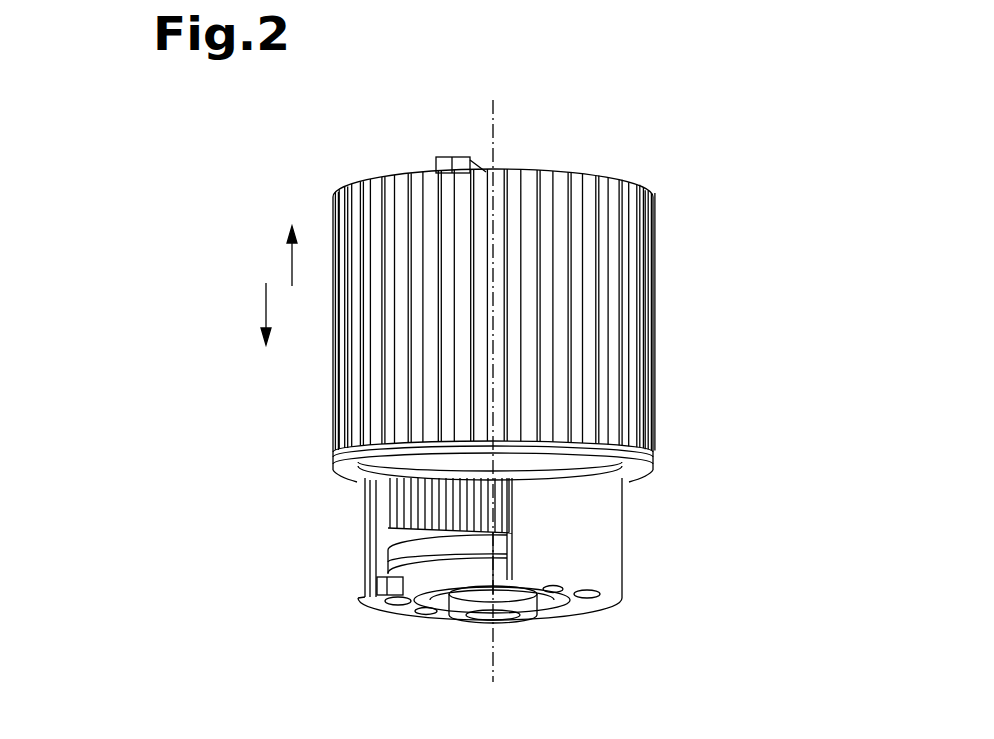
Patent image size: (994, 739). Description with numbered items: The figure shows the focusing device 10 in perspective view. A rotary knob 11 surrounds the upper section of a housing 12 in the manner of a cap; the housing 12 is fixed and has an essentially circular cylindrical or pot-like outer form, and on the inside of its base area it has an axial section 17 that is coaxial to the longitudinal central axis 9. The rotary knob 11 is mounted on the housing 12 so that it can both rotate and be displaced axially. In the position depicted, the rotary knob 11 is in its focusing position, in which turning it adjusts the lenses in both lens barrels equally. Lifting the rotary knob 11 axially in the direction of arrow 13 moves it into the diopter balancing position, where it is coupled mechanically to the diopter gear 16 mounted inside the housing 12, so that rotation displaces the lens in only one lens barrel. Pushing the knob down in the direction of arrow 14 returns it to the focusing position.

The longitudinal central axis 9 is at (493, 666).
The focusing device 10 is at (190, 261).
The rotary knob 11 is at (686, 277).
The housing 12 is at (656, 526).
The arrow 13 is at (290, 262).
The arrow 14 is at (265, 296).
The diopter gear 16 is at (402, 545).
The axial section 17 is at (457, 626).